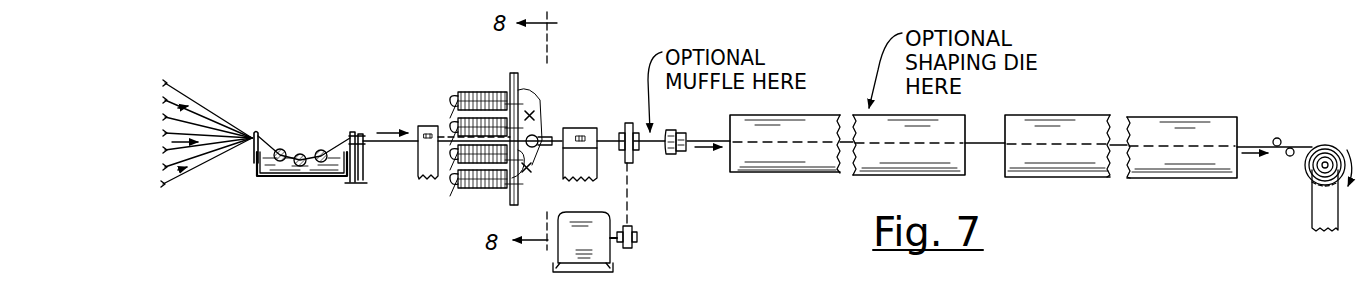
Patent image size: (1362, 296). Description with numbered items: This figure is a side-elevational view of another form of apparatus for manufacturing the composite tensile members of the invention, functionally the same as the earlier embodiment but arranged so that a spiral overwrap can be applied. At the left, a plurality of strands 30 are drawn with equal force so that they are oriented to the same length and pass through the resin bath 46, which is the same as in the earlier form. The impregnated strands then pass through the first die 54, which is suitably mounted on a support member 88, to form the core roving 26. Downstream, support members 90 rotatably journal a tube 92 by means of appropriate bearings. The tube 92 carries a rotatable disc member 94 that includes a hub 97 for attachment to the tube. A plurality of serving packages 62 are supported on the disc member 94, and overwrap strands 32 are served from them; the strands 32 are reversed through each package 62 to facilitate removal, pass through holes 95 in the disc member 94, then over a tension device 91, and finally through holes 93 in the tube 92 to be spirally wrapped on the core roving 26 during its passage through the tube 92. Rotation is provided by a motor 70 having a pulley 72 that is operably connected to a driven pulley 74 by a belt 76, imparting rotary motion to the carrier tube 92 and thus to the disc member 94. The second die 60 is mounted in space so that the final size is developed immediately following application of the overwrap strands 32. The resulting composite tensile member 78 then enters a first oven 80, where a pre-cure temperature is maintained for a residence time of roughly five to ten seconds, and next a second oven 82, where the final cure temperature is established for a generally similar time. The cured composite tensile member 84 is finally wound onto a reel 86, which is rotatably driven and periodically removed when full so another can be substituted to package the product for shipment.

The core roving 26 is at (416, 142).
The strands 30 is at (195, 122).
The overwrap strands 32 is at (457, 100).
The resin bath 46 is at (304, 146).
The first die 54 is at (348, 128).
The second die 60 is at (684, 116).
The serving packages 62 is at (482, 90).
The motor 70 is at (612, 255).
The pulley 72 is at (634, 232).
The driven pulley 74 is at (624, 128).
The belt 76 is at (630, 190).
The composite tensile member 78 is at (716, 142).
The first oven 80 is at (798, 178).
The second oven 82 is at (1190, 112).
The cured composite tensile member 84 is at (1253, 142).
The reel 86 is at (1305, 173).
The support member 88 is at (355, 184).
The support members 90 is at (418, 130).
The tension device 91 is at (547, 90).
The tube 92 is at (453, 122).
The holes 93 is at (546, 136).
The disc member 94 is at (515, 75).
The holes 95 is at (537, 65).
The hub 97 is at (522, 176).